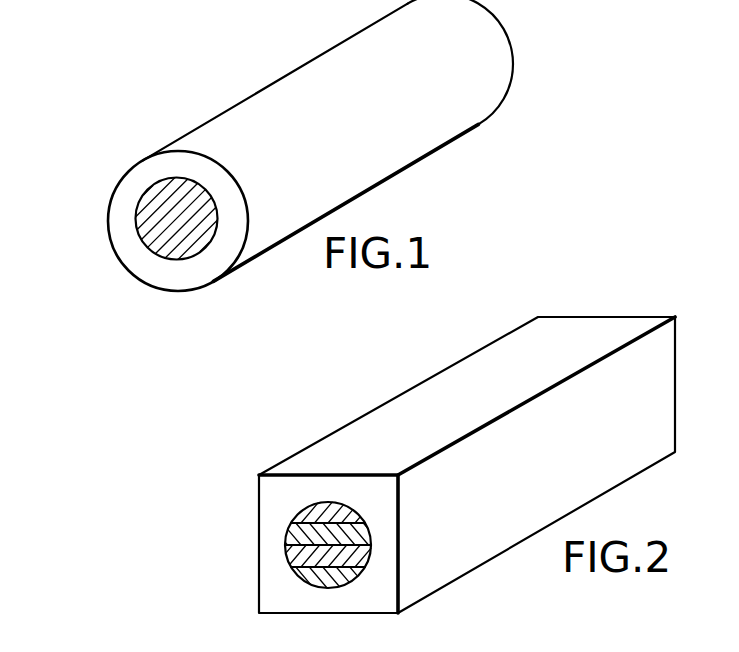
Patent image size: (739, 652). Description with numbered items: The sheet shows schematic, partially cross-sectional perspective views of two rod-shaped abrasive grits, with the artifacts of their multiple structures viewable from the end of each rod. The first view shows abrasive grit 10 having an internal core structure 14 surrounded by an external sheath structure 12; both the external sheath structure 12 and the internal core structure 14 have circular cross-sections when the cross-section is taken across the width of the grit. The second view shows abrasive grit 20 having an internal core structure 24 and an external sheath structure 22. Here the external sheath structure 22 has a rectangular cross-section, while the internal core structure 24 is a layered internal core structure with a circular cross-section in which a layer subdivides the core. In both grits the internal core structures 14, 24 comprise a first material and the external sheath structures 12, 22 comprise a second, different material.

In FIG. 1, the abrasive grit 10 is at (277, 145).
In FIG. 1, the external sheath structure 12 is at (118, 199).
In FIG. 1, the internal core structure 14 is at (124, 242).
In FIG. 2, the abrasive grit 20 is at (436, 465).
In FIG. 2, the external sheath structure 22 is at (273, 497).
In FIG. 2, the internal core structure 24 is at (276, 558).